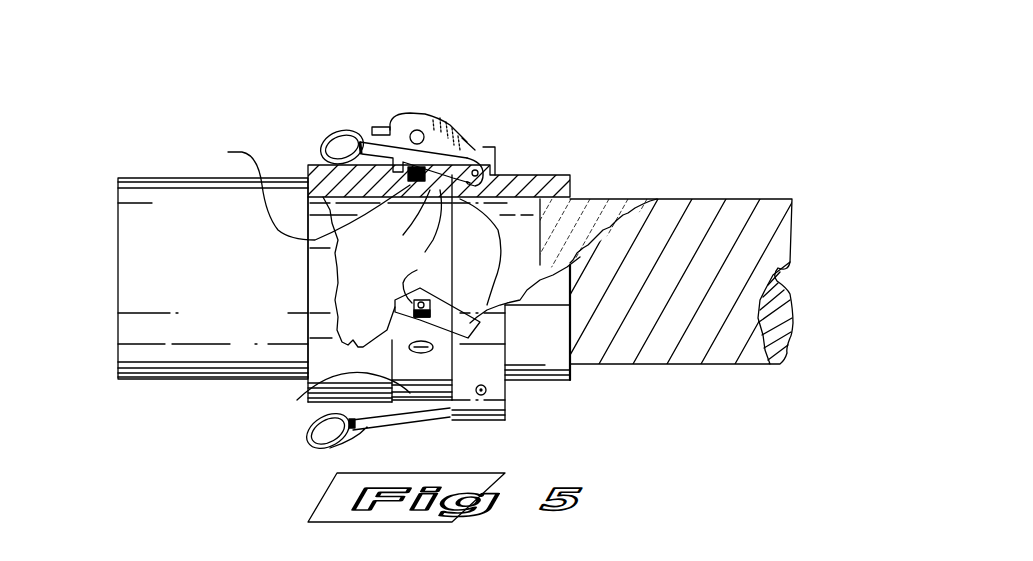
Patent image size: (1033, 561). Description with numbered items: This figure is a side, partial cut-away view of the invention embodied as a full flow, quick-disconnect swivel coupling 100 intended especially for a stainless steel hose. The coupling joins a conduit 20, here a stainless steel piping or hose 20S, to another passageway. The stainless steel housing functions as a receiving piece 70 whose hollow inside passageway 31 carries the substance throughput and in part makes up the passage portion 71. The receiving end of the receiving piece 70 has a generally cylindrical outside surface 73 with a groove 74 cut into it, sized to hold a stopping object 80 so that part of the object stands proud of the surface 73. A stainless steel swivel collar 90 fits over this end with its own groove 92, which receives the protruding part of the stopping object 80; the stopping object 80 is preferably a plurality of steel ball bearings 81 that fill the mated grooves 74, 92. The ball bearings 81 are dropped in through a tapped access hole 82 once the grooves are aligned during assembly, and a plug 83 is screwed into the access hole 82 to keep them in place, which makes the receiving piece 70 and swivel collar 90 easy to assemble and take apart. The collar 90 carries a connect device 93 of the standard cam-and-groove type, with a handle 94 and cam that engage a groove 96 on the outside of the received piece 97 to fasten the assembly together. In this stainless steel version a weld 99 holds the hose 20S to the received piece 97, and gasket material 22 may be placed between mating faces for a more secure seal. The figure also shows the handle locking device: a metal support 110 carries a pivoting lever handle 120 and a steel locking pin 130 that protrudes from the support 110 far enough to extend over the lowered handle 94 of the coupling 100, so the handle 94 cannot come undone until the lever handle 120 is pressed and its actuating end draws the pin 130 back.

The coupling 100 is at (256, 106).
The conduit 20 is at (137, 178).
The stainless steel piping or hose 20S is at (793, 199).
The hollow inside passageway 31 is at (210, 117).
The passage portion 71 is at (304, 187).
The receiving piece 70 is at (303, 165).
The cam-and-groove handle 94 is at (360, 133).
The lever handle 120 is at (378, 127).
The connect device 93 is at (473, 146).
The support 110 is at (480, 156).
The locking pin 130 is at (497, 160).
The swivel collar 90 is at (500, 176).
The received piece 97 is at (572, 186).
The weld 99 is at (657, 199).
The stopping object 80 is at (575, 395).
The steel ball bearing 81 is at (640, 397).
The groove 92 is at (397, 307).
The groove 74 is at (437, 264).
The cylindrical surface 73 is at (440, 190).
The gasket material 22 is at (482, 279).
The groove 96 is at (477, 190).
The access hole 82 is at (422, 357).
The plug 83 is at (427, 357).